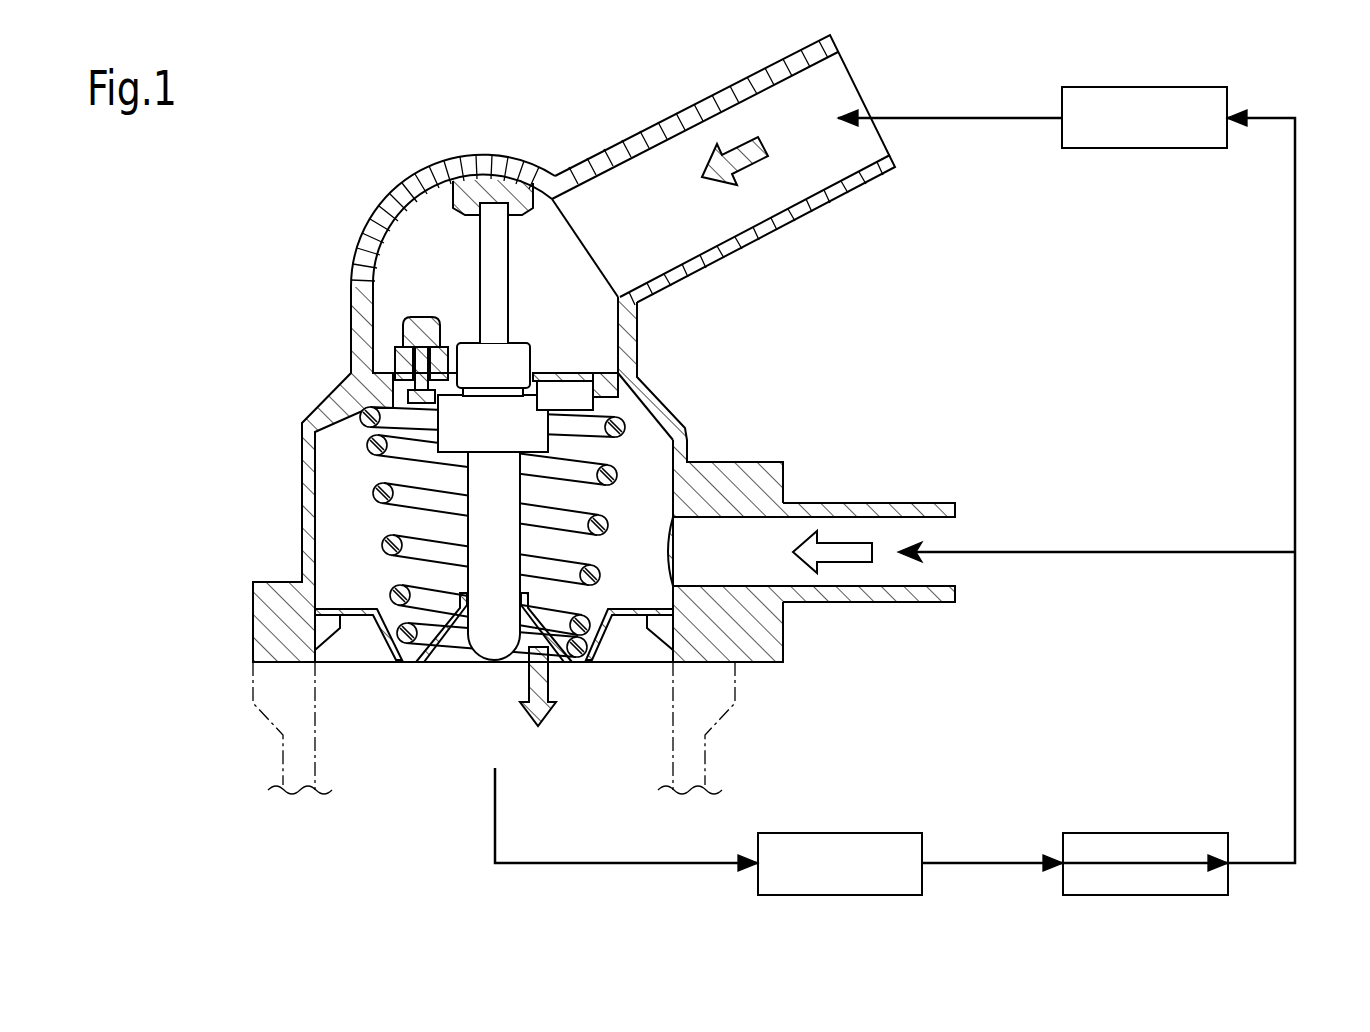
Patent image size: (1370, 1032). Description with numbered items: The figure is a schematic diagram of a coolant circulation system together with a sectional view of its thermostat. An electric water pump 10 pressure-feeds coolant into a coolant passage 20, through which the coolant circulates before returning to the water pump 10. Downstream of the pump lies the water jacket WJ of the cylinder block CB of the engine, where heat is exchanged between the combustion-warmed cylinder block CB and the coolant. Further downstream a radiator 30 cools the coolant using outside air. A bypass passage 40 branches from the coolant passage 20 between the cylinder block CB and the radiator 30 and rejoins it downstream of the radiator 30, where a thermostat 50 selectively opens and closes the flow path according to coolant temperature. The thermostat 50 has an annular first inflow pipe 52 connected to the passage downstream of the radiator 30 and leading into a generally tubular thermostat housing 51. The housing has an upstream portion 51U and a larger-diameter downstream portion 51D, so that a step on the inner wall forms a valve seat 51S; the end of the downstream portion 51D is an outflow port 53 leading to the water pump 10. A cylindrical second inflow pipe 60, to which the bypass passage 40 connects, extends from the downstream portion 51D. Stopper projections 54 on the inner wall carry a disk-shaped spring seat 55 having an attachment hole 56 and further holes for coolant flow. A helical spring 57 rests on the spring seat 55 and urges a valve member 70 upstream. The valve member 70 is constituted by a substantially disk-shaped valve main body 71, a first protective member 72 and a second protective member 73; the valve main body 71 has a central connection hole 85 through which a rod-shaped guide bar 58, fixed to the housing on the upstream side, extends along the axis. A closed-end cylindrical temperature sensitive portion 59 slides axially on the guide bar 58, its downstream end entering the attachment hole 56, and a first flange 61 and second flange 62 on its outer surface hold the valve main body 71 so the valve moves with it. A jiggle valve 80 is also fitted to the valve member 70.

The electric water pump 10 is at (838, 833).
The coolant passage 20 is at (988, 118).
The radiator 30 is at (1143, 87).
The bypass passage 40 is at (1040, 552).
The thermostat 50 is at (403, 127).
The thermostat housing 51 is at (729, 324).
The upstream portion 51U is at (637, 332).
The downstream portion 51D is at (690, 440).
The valve seat 51S is at (648, 413).
The first inflow pipe 52 is at (632, 134).
The outflow port 53 is at (373, 662).
The stopper projections 54 is at (338, 662).
The spring seat 55 is at (447, 648).
The attachment hole 56 is at (485, 612).
The helical spring 57 is at (598, 533).
The guide bar 58 is at (500, 243).
The temperature sensitive portion 59 is at (510, 494).
The second inflow pipe 60 is at (847, 503).
The first flange 61 is at (468, 343).
The second flange 62 is at (438, 436).
The valve member 70 is at (560, 320).
The valve main body 71 is at (577, 373).
The first protective member 72 is at (398, 365).
The second protective member 73 is at (405, 360).
The jiggle valve 80 is at (428, 303).
The connection hole 85 is at (516, 388).
The water jacket WJ is at (1095, 863).
The cylinder block CB is at (1160, 833).